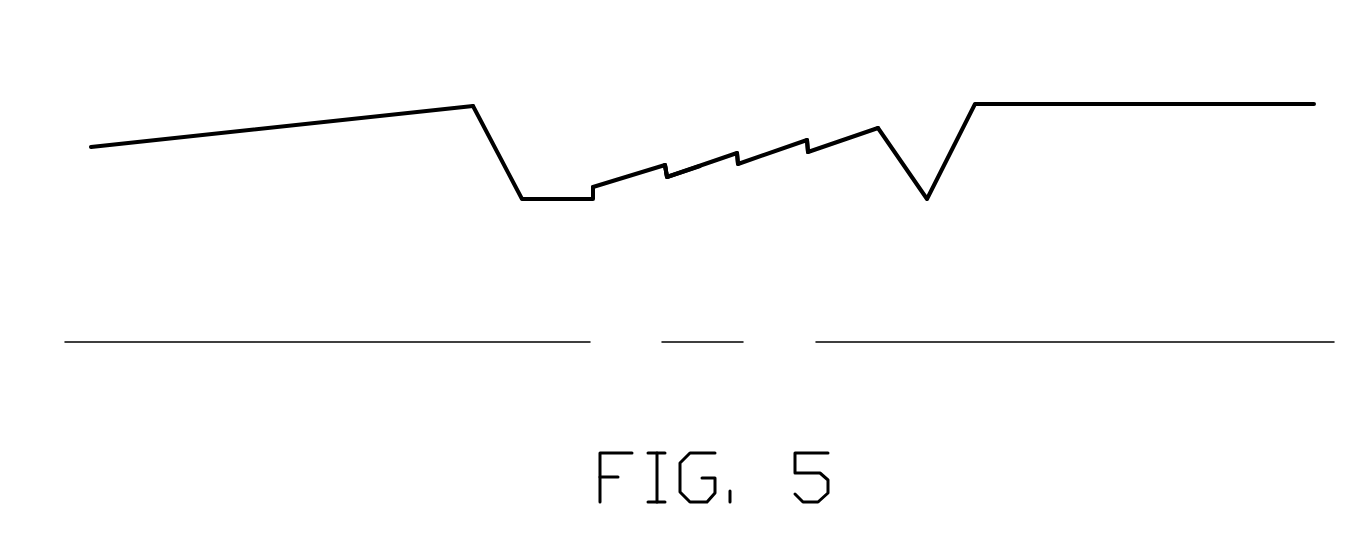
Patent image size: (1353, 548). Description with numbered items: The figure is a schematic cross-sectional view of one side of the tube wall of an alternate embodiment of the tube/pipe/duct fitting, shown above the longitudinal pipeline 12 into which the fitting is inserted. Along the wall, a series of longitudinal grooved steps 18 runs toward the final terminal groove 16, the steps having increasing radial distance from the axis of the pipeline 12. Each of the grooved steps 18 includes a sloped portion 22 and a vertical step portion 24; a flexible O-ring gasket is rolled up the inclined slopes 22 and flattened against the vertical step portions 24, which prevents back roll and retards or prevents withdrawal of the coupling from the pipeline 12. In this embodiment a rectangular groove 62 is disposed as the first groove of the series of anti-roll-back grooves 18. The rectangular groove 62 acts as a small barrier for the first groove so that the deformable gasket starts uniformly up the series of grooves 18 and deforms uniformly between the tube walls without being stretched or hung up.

The longitudinal pipeline 12 is at (709, 287).
The final terminal groove 16 is at (1096, 110).
The longitudinal grooved steps 18 is at (753, 112).
The sloped portions 22 is at (733, 101).
The vertical step portions 24 is at (705, 190).
The rectangular groove 62 is at (533, 129).